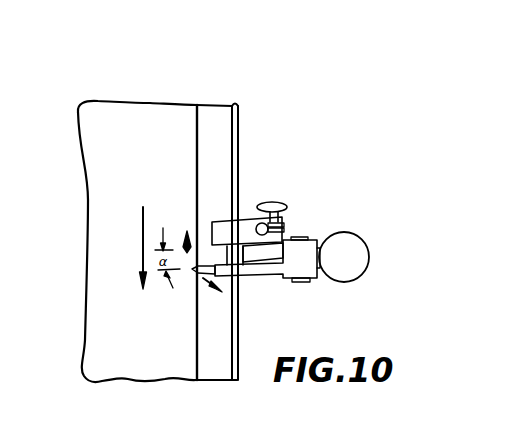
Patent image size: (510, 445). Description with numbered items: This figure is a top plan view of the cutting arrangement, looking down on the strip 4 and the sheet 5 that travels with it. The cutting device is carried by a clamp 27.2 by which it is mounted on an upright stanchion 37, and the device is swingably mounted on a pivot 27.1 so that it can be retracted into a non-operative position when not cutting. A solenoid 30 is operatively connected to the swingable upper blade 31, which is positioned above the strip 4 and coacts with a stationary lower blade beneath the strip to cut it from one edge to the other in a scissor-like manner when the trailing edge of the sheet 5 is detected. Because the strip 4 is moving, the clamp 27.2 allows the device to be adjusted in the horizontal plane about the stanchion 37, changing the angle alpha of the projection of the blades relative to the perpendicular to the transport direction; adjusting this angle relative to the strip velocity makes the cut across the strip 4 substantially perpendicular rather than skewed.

The strip 4 is at (224, 117).
The sheet 5 is at (96, 148).
The pivot 27.1 is at (237, 252).
The clamp 27.2 is at (226, 221).
The solenoid 30 is at (353, 245).
The upper blade 31 is at (196, 274).
The upright stanchion 37 is at (272, 221).